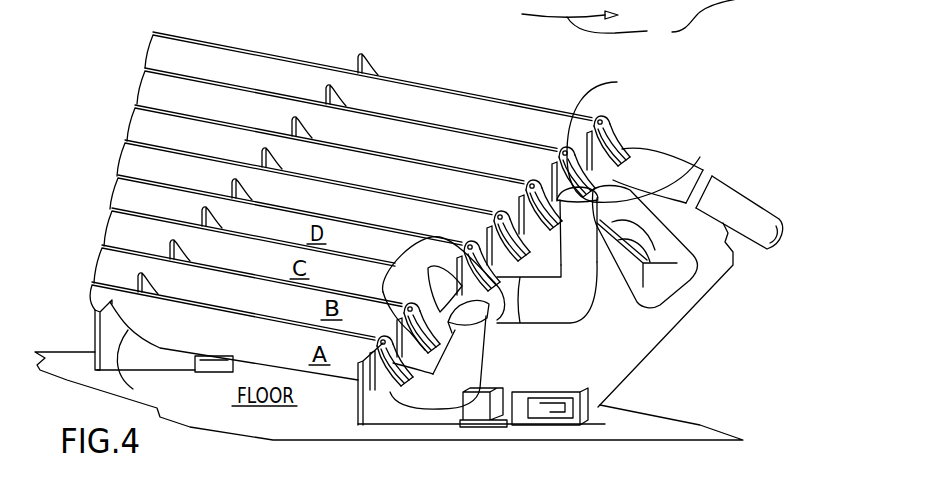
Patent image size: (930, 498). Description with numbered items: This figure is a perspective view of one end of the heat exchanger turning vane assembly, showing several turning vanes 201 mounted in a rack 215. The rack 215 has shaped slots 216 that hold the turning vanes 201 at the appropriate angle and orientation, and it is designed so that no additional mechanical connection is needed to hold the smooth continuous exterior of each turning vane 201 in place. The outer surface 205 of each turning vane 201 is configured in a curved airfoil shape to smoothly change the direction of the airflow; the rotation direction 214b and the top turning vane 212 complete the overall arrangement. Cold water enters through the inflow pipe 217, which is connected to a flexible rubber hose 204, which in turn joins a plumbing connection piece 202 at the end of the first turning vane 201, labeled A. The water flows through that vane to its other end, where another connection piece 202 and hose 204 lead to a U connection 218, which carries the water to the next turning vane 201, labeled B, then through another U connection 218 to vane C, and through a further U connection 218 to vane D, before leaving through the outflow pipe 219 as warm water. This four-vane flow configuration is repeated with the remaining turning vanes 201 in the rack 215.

The heat exchanger turning vane 201 is at (152, 80).
The top guide bar 212 is at (170, 32).
The plumbing connection piece 202 is at (600, 116).
The flexible hose 204 is at (418, 395).
The outer surface 205 is at (250, 348).
The rotation direction 214b is at (601, 21).
The rack 215 is at (600, 372).
The shaped slot 216 is at (133, 389).
The inflow pipe 217 is at (684, 162).
The U connection 218 is at (400, 283).
The outflow pipe 219 is at (738, 200).